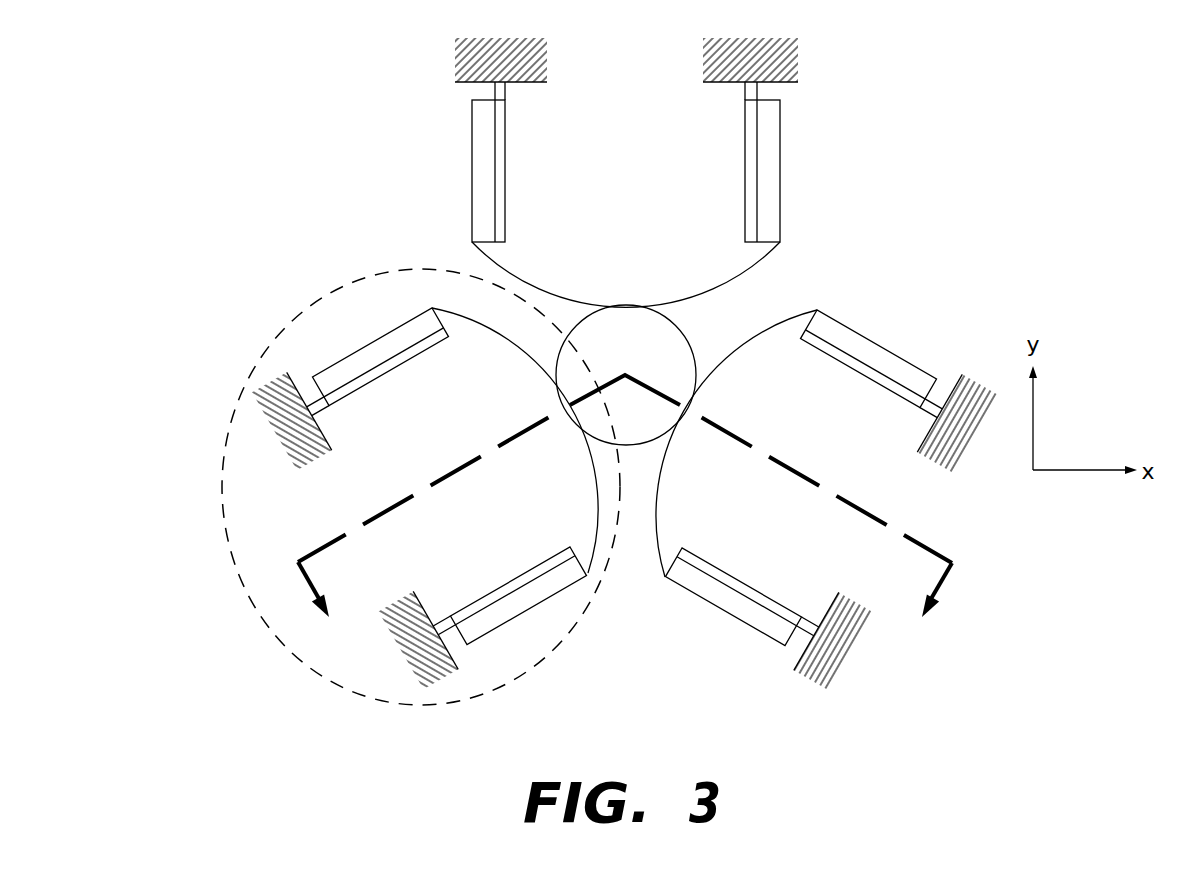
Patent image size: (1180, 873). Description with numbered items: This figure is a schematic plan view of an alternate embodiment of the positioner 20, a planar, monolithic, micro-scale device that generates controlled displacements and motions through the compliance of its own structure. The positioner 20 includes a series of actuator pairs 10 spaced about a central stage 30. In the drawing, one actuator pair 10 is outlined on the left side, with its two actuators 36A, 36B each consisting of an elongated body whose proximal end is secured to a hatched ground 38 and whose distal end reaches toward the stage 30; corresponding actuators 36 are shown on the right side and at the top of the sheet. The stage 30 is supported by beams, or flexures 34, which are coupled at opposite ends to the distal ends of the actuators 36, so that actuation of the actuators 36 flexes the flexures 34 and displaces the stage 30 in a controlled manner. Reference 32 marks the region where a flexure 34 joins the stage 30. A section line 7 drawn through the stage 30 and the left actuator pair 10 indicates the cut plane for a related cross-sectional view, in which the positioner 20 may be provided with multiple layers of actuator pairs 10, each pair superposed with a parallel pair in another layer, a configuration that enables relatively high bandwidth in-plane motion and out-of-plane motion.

The section line 7- 7 is at (625, 537).
The actuator pair 10 is at (307, 314).
The positioner 20 is at (852, 185).
The stage 30 is at (605, 362).
The hub junction 32 is at (694, 385).
The flexure 34 is at (658, 495).
The actuator 36 is at (877, 353).
The upper left actuator 36A is at (383, 352).
The lower left actuator 36B is at (512, 595).
The ground 38 is at (835, 665).